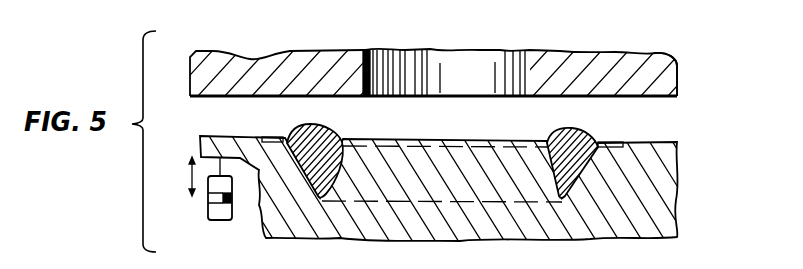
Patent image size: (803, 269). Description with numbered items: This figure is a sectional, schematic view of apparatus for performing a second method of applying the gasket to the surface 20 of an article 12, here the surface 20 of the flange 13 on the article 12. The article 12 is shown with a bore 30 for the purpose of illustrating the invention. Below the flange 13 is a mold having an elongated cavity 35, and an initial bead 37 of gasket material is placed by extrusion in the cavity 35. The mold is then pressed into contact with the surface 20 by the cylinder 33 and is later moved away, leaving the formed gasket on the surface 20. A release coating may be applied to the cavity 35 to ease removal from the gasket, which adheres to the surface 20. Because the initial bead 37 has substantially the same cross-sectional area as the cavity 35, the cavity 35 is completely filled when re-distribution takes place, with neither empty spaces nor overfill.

The article 12 is at (560, 55).
The flange 13 is at (678, 63).
The surface 20 is at (300, 97).
The bore 30 is at (487, 87).
The cylinder 33 is at (207, 220).
The elongated cavity 35 is at (610, 143).
The initial bead 37 is at (332, 130).